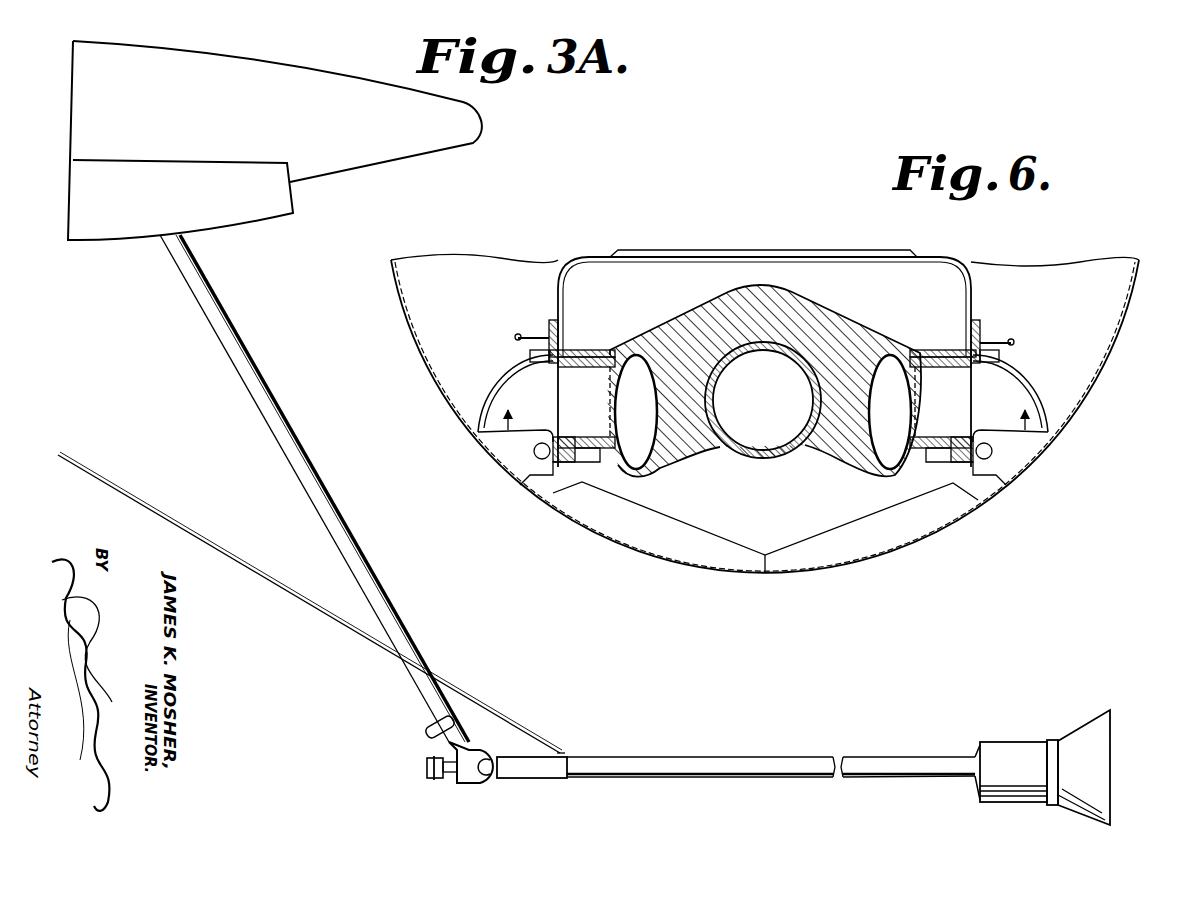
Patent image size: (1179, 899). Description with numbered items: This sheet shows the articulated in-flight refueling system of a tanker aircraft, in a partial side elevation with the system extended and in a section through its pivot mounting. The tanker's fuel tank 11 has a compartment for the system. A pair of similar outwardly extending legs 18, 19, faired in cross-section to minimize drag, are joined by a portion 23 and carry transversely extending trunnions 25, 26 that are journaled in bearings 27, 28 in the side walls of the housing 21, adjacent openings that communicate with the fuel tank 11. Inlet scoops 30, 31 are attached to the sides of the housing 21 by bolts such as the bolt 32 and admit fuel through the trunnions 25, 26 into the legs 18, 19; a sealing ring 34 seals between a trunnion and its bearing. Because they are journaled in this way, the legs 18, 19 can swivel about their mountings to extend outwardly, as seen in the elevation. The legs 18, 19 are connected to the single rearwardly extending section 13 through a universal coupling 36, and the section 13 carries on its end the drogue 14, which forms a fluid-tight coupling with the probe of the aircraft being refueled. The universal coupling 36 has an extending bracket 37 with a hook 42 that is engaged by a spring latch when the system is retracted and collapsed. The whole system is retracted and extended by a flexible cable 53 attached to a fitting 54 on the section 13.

In FIG. 3A, the fuel tank 11 is at (237, 112).
In FIG. 6, the fuel tank 11 is at (1103, 367).
In FIG. 3A, the rearwardly extending section 13 is at (793, 767).
In FIG. 3A, the drogue 14 is at (1073, 745).
In FIG. 6, the leg 18 is at (867, 440).
In FIG. 3A, the leg 19 is at (385, 593).
In FIG. 6, the leg 19 is at (658, 447).
In FIG. 6, the housing 21 is at (790, 260).
In FIG. 6, the joining portion 23 is at (838, 320).
In FIG. 6, the trunnion 25 is at (600, 453).
In FIG. 6, the trunnion 26 is at (950, 370).
In FIG. 6, the bearing 27 is at (588, 356).
In FIG. 6, the bearing 28 is at (933, 467).
In FIG. 6, the inlet scoop 30 is at (518, 388).
In FIG. 6, the inlet scoop 31 is at (1023, 383).
In FIG. 6, the bolt 32 is at (557, 312).
In FIG. 6, the sealing ring 34 is at (570, 440).
In FIG. 3A, the universal coupling 36 is at (482, 733).
In FIG. 3A, the bracket 37 is at (440, 777).
In FIG. 3A, the hook 42 is at (427, 767).
In FIG. 3A, the flexible cable 53 is at (270, 580).
In FIG. 3A, the fitting 54 is at (560, 753).